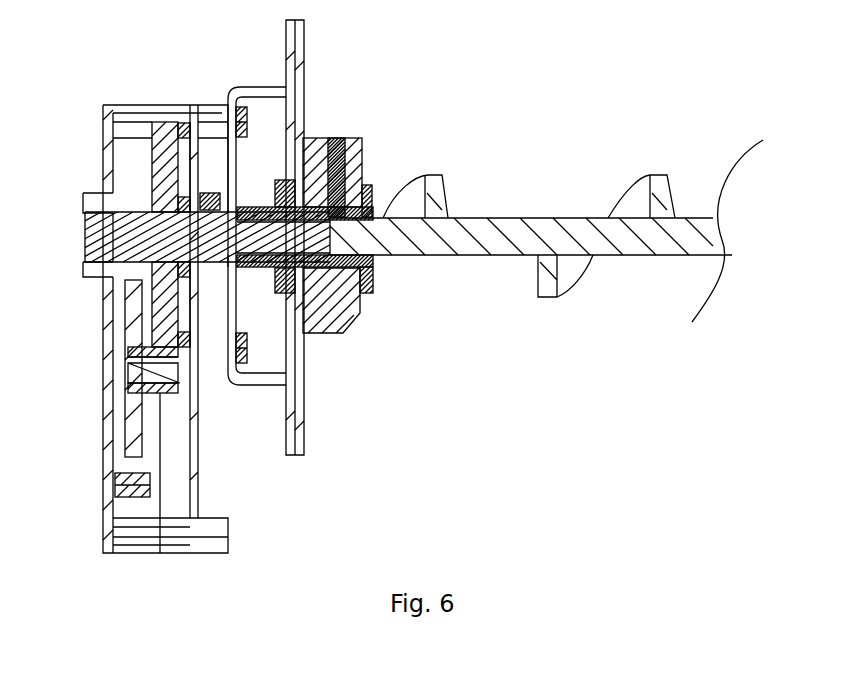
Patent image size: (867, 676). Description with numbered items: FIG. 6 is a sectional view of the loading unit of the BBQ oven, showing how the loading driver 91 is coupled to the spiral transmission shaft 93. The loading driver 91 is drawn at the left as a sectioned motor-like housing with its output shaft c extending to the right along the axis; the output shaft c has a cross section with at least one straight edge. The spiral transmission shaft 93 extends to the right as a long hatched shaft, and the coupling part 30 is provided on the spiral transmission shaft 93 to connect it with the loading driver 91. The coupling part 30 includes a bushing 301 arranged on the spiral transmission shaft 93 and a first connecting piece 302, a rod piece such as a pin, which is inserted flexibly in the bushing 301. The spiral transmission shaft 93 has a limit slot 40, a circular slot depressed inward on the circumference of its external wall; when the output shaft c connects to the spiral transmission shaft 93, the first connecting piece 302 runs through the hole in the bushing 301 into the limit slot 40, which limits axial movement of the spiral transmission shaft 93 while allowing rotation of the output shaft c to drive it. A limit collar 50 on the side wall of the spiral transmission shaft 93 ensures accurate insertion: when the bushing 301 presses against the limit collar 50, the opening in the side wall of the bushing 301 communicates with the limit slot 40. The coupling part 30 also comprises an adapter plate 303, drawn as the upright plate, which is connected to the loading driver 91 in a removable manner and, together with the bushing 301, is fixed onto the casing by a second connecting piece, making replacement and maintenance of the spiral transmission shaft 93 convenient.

The loading driver 91 is at (128, 162).
The output shaft c is at (150, 236).
The adapter plate 303 is at (254, 89).
The coupling part 30 is at (300, 97).
The bushing 301 is at (327, 140).
The first connecting piece 302 is at (345, 182).
The spiral transmission shaft 93 is at (498, 232).
The limit slot 40 is at (330, 270).
The limit collar 50 is at (370, 270).